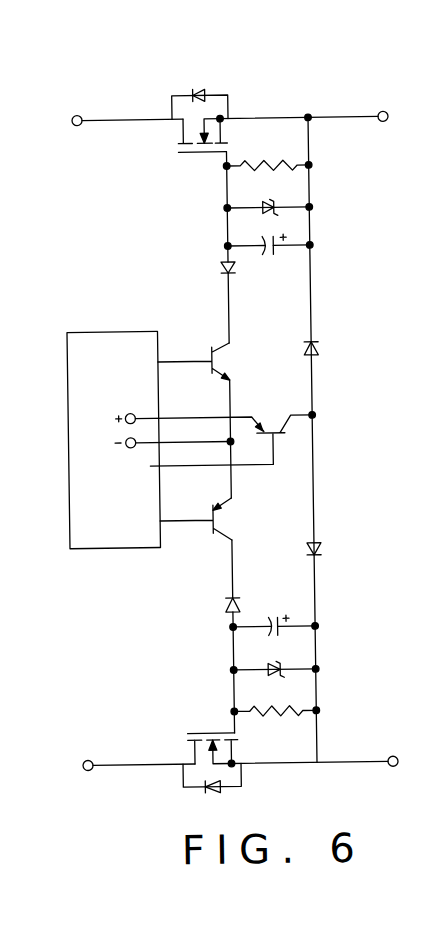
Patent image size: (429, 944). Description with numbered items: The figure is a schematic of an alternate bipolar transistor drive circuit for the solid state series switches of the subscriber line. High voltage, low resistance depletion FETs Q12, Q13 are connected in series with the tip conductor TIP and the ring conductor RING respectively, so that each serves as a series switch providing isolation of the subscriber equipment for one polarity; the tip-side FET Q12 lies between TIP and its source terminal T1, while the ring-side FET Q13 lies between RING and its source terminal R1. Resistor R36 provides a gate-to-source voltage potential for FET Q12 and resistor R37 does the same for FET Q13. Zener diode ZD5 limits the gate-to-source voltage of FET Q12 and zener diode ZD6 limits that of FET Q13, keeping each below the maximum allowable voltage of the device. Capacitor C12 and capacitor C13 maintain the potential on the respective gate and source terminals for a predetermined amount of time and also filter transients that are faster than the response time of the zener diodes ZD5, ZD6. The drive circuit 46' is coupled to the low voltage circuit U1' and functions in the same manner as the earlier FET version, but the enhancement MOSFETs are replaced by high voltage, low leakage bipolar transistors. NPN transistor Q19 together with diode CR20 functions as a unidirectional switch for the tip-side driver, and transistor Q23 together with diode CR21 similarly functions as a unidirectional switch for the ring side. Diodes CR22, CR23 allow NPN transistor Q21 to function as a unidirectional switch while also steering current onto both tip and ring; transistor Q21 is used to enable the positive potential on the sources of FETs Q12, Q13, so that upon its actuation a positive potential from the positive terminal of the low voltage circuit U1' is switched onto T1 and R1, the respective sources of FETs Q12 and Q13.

The depletion FET Q12 is at (189, 114).
The resistor R36 is at (267, 153).
The zener diode ZD5 is at (268, 197).
The capacitor C12 is at (268, 257).
The diode CR20 is at (206, 270).
The drive circuit 46' is at (165, 223).
The circuit U1' is at (108, 424).
The bipolar NPN transistor Q19 is at (214, 361).
The NPN transistor Q21 is at (225, 429).
The bipolar transistor Q23 is at (216, 519).
The diode CR22 is at (335, 351).
The diode CR23 is at (337, 549).
The diode CR21 is at (211, 609).
The capacitor C13 is at (273, 614).
The zener diode ZD6 is at (274, 660).
The resistor R37 is at (275, 702).
The depletion FET Q13 is at (196, 759).
The tip conductor TIP is at (123, 111).
The source terminal of FET Q12 T1 is at (306, 106).
The ring conductor RING is at (130, 755).
The source terminal of FET Q13 R1 is at (316, 751).